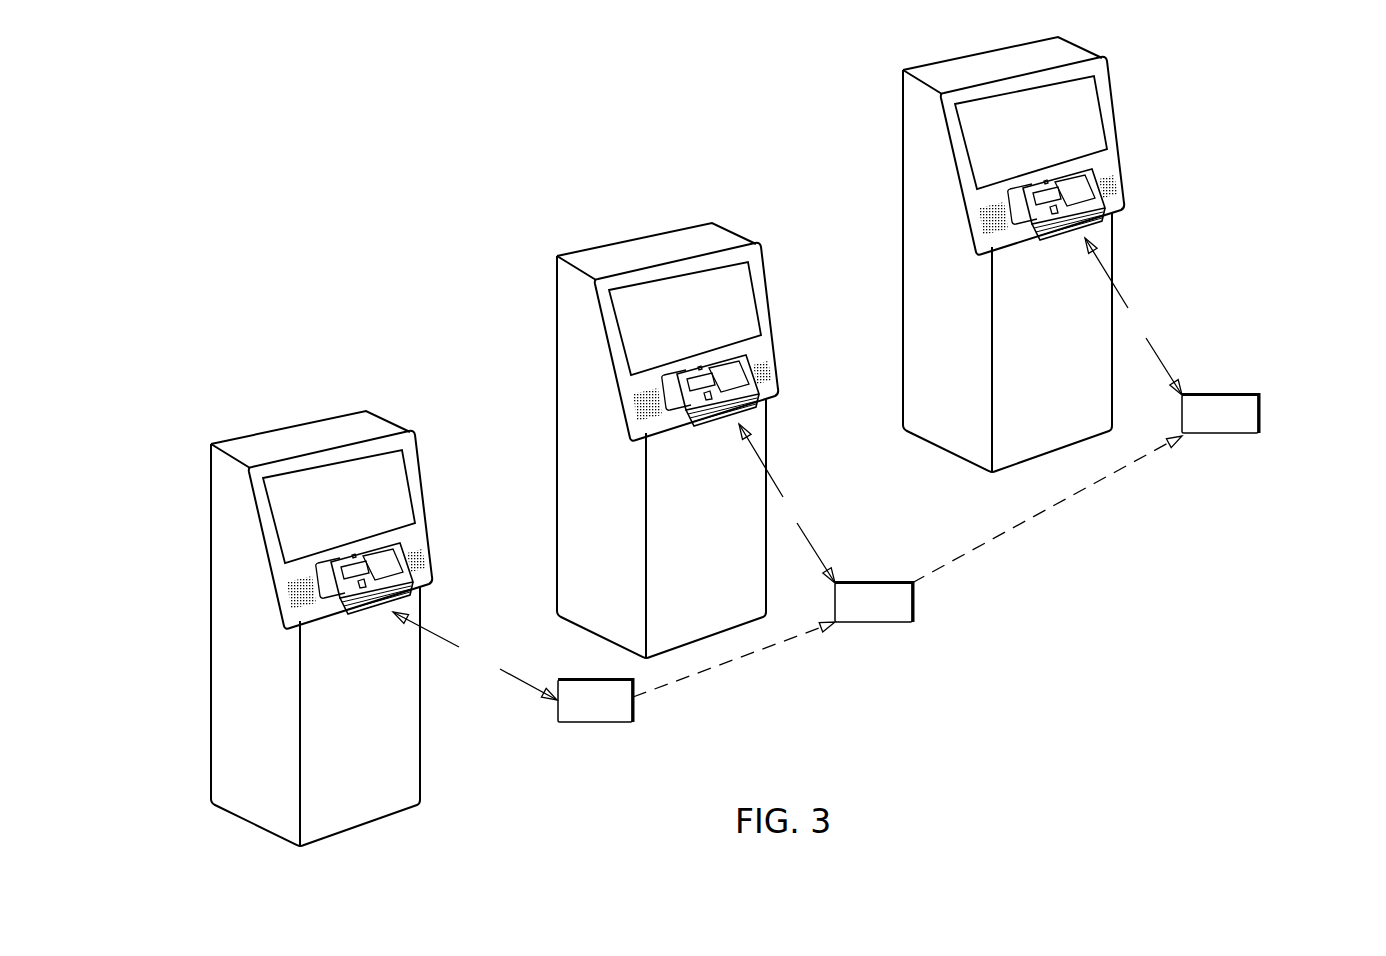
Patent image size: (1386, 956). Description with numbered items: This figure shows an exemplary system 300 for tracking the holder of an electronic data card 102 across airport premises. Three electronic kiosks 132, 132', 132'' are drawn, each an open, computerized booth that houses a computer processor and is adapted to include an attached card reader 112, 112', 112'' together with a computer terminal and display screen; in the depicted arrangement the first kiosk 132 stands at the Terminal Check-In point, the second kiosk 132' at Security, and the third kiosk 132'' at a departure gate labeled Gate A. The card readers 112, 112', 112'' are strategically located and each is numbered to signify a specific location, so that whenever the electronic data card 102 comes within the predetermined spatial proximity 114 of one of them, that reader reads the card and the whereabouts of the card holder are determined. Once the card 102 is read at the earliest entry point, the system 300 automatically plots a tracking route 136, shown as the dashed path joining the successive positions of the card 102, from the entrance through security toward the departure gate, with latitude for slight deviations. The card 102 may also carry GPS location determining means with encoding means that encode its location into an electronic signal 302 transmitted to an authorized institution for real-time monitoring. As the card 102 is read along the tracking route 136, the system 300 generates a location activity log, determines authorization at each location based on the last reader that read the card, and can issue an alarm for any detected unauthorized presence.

The system 300 is at (390, 234).
The electronic signal 302 is at (412, 745).
The electronic kiosk 132 is at (321, 628).
The electronic kiosk 132' is at (667, 440).
The electronic kiosk 132'' is at (1013, 254).
The card reader 112 is at (363, 556).
The card reader 112' is at (709, 368).
The card reader 112'' is at (1055, 182).
The predetermined spatial proximity 114 is at (787, 469).
The electronic data card 102 is at (612, 730).
The tracking route 136 is at (1041, 521).